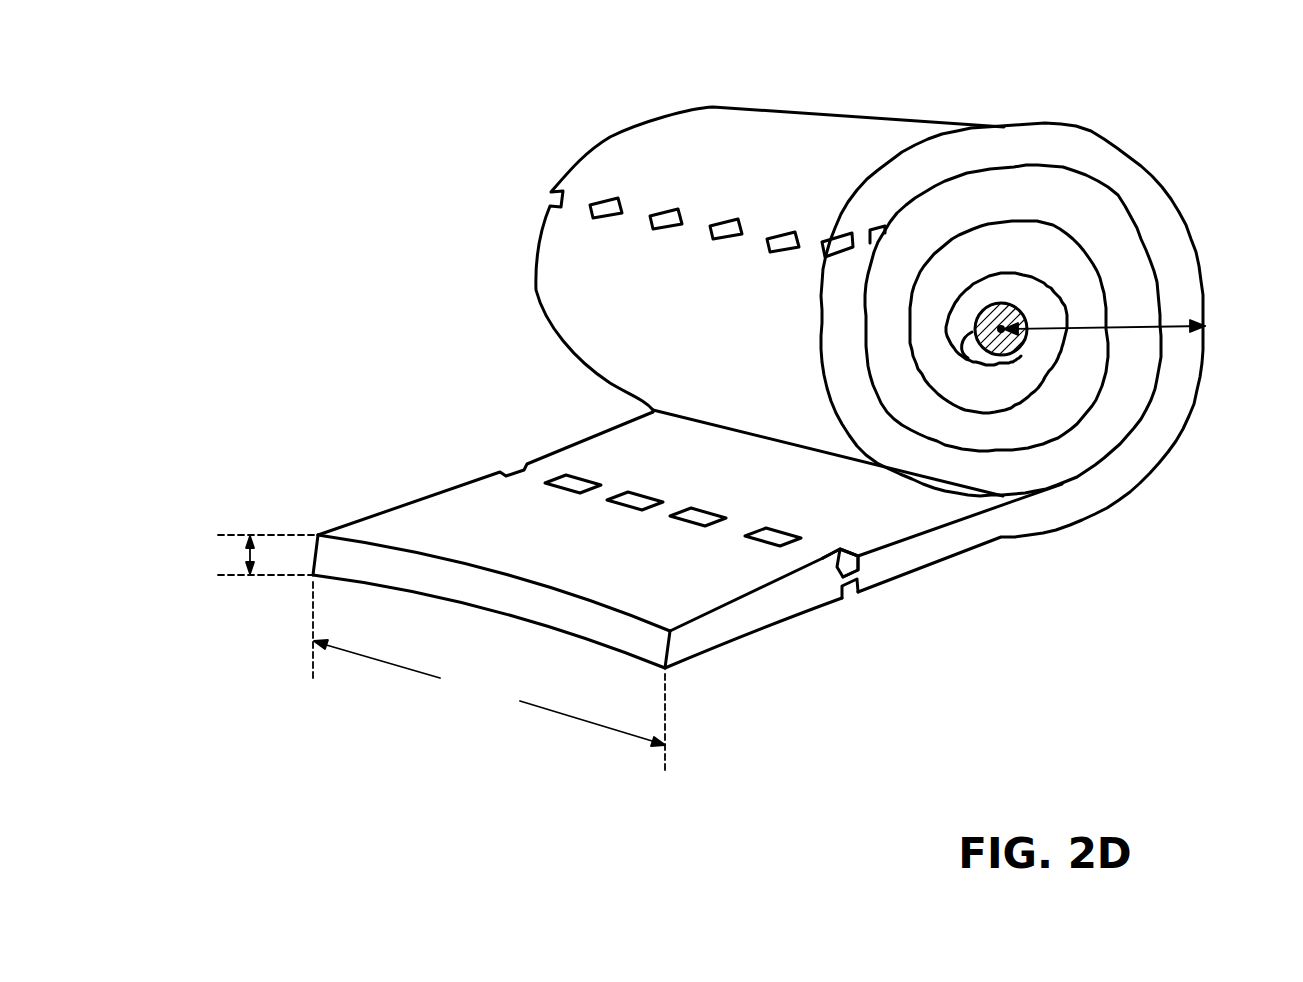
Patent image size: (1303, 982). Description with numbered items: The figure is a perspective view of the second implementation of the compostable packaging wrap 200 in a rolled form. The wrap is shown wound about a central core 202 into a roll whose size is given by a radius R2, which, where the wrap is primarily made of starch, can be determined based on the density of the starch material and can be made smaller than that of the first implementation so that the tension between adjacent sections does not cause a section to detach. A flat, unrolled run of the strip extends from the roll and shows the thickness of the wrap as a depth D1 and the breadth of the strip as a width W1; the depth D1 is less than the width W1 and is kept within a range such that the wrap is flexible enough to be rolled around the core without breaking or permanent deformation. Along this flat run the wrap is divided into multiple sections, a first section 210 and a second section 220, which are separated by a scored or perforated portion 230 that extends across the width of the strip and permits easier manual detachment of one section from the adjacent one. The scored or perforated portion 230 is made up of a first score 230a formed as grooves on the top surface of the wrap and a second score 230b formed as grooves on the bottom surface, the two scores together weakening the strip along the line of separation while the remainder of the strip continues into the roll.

The compostable packaging wrap 200 is at (490, 152).
The core 202 is at (1003, 303).
The first section 210 is at (478, 518).
The second section 220 is at (885, 517).
The scored or perforated portion 230 is at (903, 758).
The first score 230a is at (843, 567).
The second score 230b is at (855, 595).
The radius R2 is at (1127, 323).
The depth D1 is at (260, 555).
The width W1 is at (489, 676).